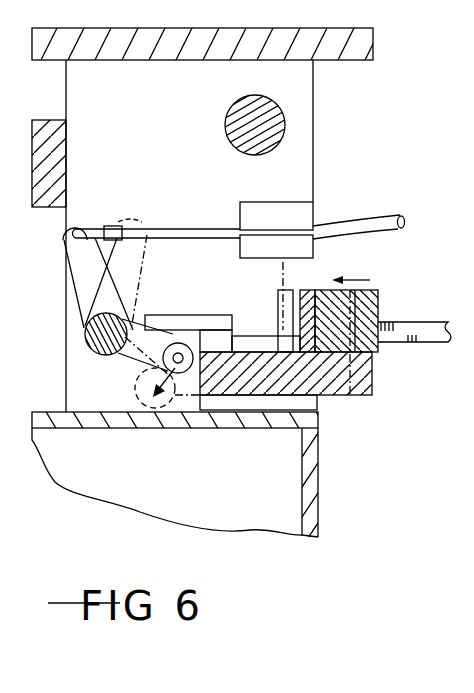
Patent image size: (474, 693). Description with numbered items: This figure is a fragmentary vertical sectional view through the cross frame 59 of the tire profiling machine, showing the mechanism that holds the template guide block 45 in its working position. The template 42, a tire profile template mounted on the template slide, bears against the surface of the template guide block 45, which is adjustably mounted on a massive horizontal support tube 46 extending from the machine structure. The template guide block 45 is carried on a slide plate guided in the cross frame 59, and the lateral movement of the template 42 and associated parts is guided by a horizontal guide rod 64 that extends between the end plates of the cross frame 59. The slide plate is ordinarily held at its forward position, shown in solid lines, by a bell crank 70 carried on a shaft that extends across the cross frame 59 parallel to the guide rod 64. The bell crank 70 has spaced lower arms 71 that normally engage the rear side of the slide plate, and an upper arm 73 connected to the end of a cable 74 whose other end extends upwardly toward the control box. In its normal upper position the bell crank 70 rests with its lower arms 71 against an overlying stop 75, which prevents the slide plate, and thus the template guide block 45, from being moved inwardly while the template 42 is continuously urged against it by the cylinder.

The cross frame 59 is at (340, 80).
The horizontal guide rod 64 is at (285, 122).
The cable 74 is at (178, 228).
The upper arm 73 is at (72, 280).
The bell crank 70 is at (76, 329).
The lower arms 71 is at (138, 318).
The stop 75 is at (182, 315).
The template guide block 45 is at (296, 290).
The template 42 is at (405, 352).
The support tube 46 is at (321, 450).